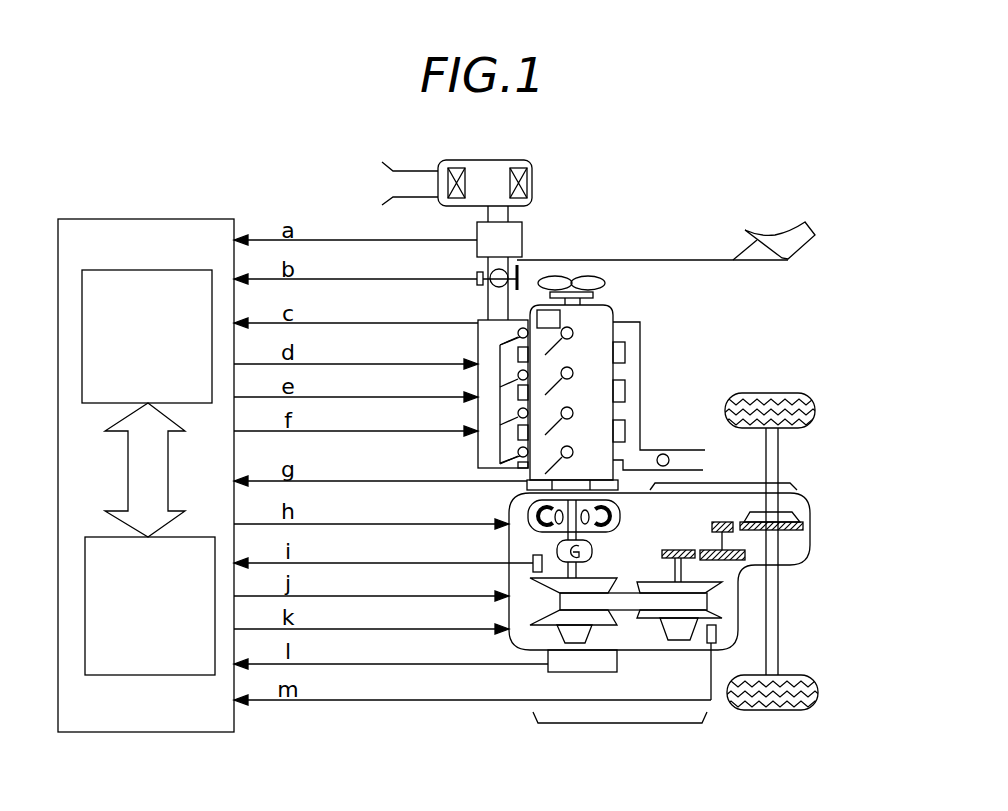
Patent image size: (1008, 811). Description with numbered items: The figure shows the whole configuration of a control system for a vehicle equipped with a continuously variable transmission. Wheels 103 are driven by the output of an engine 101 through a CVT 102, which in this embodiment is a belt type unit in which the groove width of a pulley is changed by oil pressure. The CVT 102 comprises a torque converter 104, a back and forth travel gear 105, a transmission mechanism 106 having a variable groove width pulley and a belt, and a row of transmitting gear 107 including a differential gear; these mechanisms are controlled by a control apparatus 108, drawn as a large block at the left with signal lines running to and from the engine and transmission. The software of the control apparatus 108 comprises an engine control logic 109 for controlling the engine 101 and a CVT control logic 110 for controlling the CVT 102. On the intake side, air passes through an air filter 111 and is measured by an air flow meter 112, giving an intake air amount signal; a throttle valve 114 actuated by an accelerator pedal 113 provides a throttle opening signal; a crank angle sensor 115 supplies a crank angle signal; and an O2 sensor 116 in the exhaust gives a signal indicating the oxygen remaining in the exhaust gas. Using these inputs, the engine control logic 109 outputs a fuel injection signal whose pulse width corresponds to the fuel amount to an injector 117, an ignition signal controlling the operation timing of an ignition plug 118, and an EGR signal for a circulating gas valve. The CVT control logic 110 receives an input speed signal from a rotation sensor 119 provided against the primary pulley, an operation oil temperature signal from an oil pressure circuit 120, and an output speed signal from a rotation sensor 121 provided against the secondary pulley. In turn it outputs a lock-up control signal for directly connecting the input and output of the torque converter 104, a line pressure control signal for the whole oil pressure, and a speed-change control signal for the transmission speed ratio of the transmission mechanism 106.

The engine 101 is at (598, 373).
The CVT 102 is at (810, 532).
The wheels 103 is at (795, 393).
The torque converter 104 is at (620, 512).
The back and forth travel gear 105 is at (592, 551).
The transmission mechanism 106 is at (636, 750).
The row of transmitting gear 107 is at (756, 479).
The control apparatus 108 is at (135, 733).
The engine control logic 109 is at (88, 403).
The CVT control logic 110 is at (195, 537).
The air filter 111 is at (500, 160).
The air flow meter 112 is at (522, 240).
The accelerator pedal 113 is at (757, 262).
The throttle valve 114 is at (492, 292).
The crank angle sensor 115 is at (560, 313).
The O2 sensor 116 is at (665, 454).
The injector 117 is at (517, 333).
The ignition plug 118 is at (575, 333).
The rotation sensor 119 is at (533, 563).
The oil pressure circuit 120 is at (562, 673).
The rotation sensor 121 is at (716, 632).